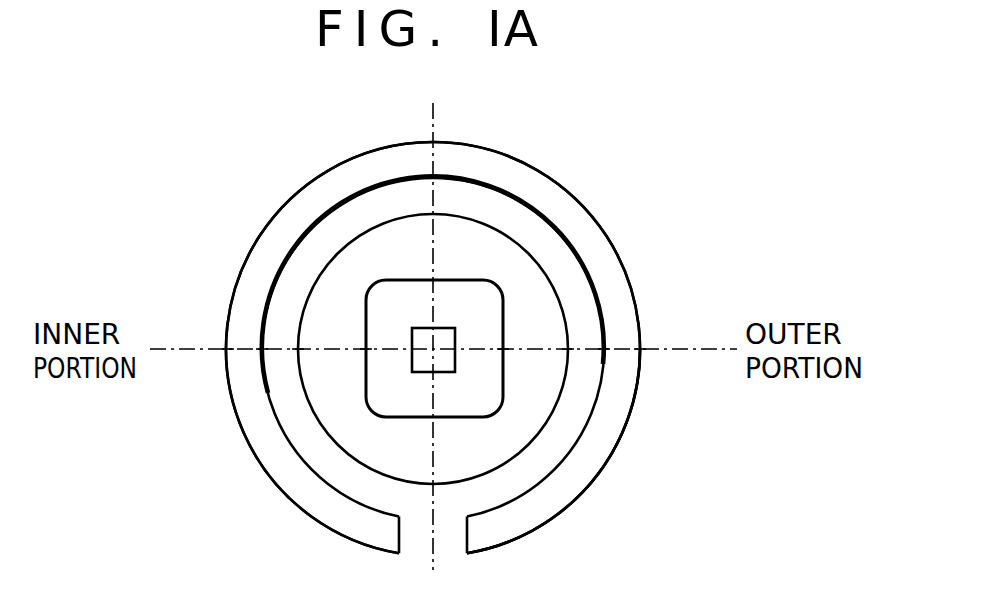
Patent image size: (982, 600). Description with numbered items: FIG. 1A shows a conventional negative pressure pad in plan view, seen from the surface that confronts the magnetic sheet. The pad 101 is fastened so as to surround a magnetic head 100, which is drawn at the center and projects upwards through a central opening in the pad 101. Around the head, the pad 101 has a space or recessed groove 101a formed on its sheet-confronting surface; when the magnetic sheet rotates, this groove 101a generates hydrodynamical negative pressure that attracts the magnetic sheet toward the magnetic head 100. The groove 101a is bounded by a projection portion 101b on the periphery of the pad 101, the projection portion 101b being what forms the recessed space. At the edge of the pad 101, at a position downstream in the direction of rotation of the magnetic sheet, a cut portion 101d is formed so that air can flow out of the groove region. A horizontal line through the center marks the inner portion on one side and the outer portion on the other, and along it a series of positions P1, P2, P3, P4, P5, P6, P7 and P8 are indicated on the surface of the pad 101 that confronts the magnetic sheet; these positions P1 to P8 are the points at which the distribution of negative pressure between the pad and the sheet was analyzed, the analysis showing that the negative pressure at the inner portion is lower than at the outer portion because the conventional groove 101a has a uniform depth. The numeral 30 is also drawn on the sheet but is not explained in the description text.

The lens / optical element 30 is at (592, 212).
The magnetic head 100 is at (445, 328).
The pad 101 is at (302, 188).
The space (recessed groove) 101a is at (493, 198).
The projection portion 101b is at (605, 452).
The cut portion 101d is at (420, 550).
The position P1 is at (228, 350).
The position P2 is at (260, 348).
The position P3 is at (297, 353).
The position P4 is at (367, 348).
The position P5 is at (503, 351).
The position P6 is at (567, 348).
The position P7 is at (607, 348).
The position P8 is at (640, 348).